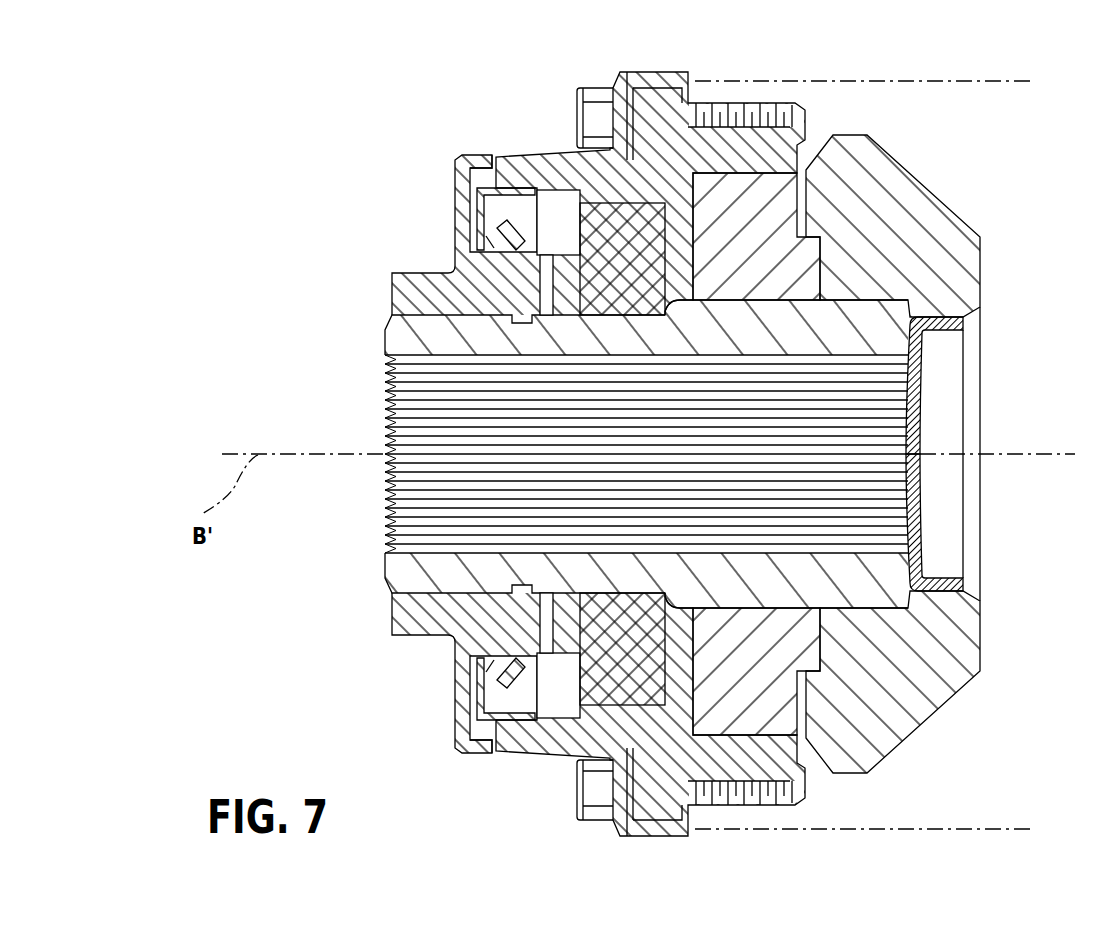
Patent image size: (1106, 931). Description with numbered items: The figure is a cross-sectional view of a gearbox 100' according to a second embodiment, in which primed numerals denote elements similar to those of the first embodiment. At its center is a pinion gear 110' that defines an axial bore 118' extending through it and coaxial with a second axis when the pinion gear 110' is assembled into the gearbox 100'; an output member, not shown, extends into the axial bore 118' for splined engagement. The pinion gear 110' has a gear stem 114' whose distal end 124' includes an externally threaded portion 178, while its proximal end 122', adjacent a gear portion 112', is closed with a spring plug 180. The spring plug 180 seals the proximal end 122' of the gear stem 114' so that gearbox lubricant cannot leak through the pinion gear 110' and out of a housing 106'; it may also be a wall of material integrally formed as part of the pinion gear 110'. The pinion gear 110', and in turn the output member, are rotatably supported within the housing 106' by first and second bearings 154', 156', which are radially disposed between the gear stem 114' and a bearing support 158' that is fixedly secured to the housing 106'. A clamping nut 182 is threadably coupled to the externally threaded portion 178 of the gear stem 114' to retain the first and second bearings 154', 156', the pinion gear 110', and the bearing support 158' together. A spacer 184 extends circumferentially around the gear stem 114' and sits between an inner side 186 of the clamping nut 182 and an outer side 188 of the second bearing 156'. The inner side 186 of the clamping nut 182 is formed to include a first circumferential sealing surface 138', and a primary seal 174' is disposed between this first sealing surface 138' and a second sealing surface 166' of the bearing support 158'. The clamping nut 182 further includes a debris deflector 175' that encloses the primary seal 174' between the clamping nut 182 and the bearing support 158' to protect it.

The gearbox 100' is at (648, 257).
The housing 106' is at (865, 419).
The pinion gear 110' is at (1027, 376).
The gear portion 112' is at (893, 444).
The gear stem 114' is at (622, 545).
The axial bore 118' is at (615, 454).
The proximal end 122' is at (849, 524).
The distal end 124' is at (470, 442).
The first circumferential sealing surface 138' is at (454, 438).
The first bearing 154' is at (754, 494).
The second bearing 156' is at (586, 428).
The bearing support 158' is at (671, 421).
The second sealing surface 166' is at (496, 379).
The primary seal 174' is at (612, 193).
The debris deflector 175' is at (569, 714).
The externally threaded portion 178 is at (413, 595).
The spring plug 180 is at (940, 582).
The clamping nut 182 is at (402, 273).
The spacer 184 is at (540, 617).
The inner side 186 is at (530, 712).
The outer side 188 is at (560, 205).